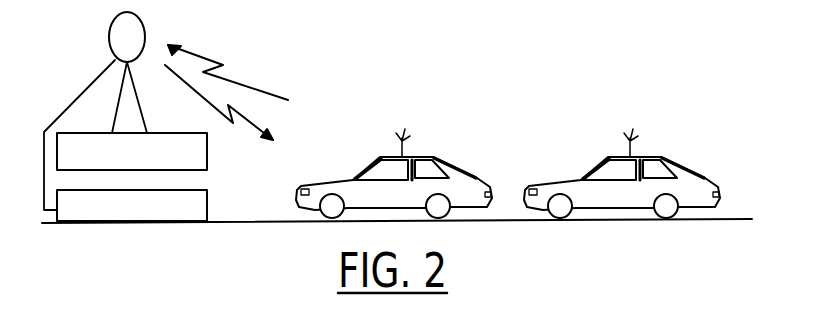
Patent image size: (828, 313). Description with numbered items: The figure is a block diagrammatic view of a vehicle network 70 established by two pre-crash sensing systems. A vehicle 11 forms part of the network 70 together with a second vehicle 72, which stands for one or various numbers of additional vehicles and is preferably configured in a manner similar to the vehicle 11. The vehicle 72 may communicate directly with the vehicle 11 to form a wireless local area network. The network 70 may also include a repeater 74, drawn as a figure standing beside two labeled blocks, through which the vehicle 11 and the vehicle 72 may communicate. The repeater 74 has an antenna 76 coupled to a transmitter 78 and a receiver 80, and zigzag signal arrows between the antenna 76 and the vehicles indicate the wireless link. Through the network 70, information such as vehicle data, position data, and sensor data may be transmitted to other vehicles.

The network 70 is at (328, 70).
The repeater 74 is at (110, 46).
The antenna 76 is at (143, 20).
The transmitter 78 is at (207, 150).
The receiver 80 is at (207, 207).
The vehicle 11 is at (442, 155).
The second vehicle 72 is at (658, 155).